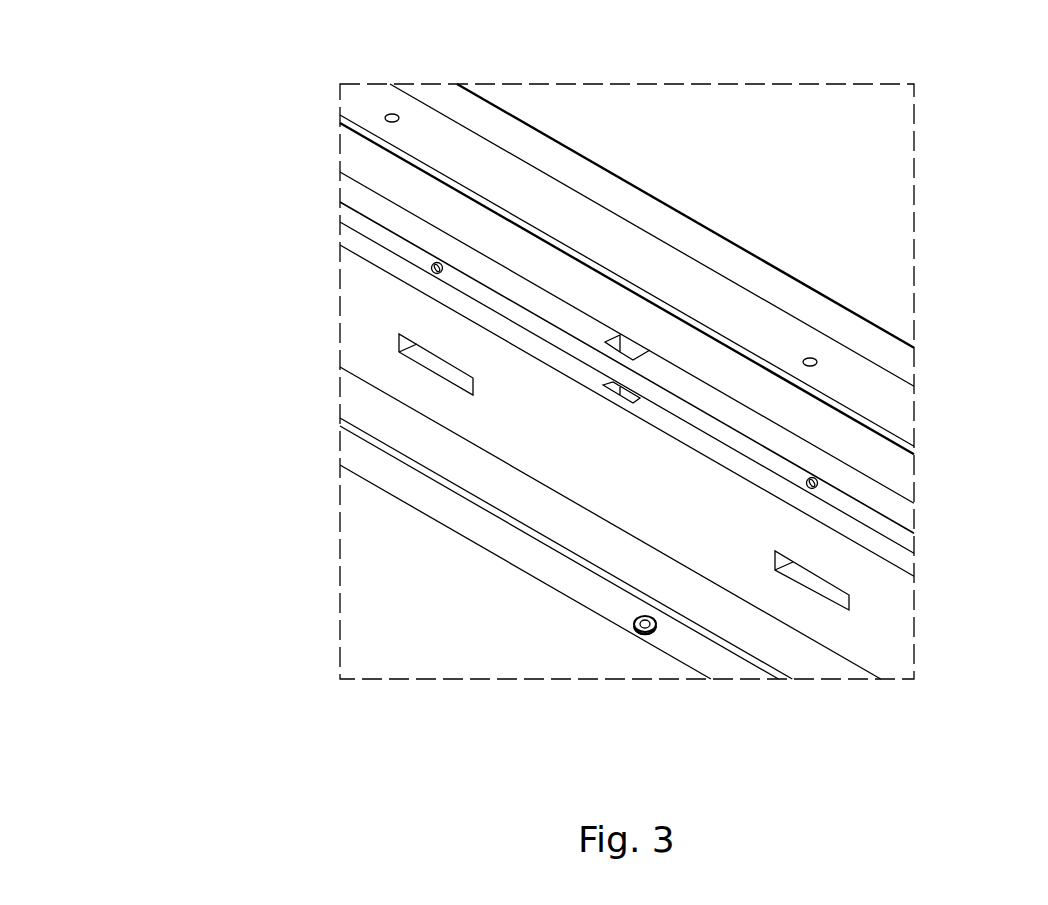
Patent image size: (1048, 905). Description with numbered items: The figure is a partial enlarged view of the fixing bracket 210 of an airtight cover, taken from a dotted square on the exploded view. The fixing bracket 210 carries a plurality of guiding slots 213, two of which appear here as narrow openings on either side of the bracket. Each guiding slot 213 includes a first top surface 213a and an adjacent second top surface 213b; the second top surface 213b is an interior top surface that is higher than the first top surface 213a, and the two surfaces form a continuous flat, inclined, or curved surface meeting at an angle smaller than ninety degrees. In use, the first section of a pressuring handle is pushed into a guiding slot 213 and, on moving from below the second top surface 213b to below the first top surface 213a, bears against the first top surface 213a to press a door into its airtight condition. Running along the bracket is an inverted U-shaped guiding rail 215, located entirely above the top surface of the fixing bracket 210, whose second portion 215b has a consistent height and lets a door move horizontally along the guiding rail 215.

The fixing bracket 210 is at (898, 293).
The guiding slot 213 is at (585, 460).
The first top surface 213a is at (447, 350).
The second top surface 213b is at (406, 318).
The guiding rail 215 is at (580, 220).
The second portion 215b is at (578, 341).